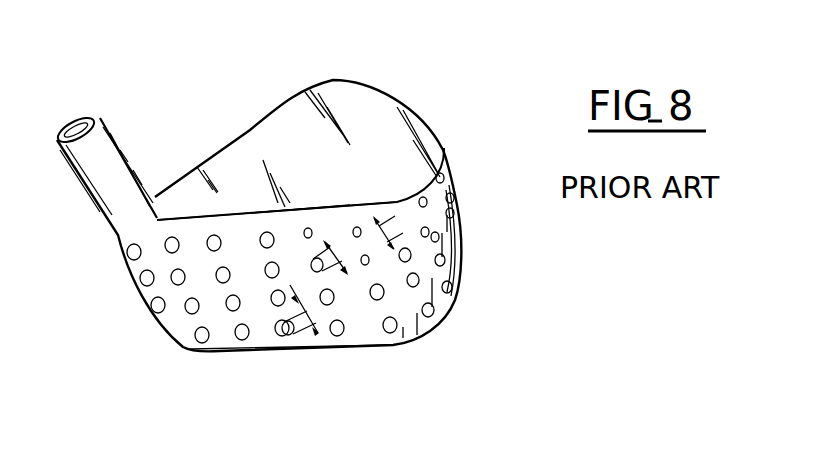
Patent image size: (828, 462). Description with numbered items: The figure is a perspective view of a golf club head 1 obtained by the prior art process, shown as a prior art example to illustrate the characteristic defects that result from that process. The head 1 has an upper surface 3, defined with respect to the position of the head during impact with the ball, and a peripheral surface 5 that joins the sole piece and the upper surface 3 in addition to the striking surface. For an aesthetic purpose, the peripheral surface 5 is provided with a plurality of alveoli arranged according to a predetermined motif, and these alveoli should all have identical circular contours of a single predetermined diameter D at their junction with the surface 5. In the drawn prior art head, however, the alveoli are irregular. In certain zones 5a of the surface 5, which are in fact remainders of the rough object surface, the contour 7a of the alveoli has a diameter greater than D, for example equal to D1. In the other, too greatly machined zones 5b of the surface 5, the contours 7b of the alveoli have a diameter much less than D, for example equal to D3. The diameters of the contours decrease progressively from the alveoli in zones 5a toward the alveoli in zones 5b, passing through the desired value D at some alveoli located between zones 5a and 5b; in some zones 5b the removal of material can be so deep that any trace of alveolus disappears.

The head 1 is at (438, 107).
The upper surface 3 is at (357, 102).
The peripheral surface 5 is at (315, 340).
The zones of surface 5a is at (187, 347).
The zones of surface 5b is at (327, 220).
The contour 7a is at (208, 338).
The contours 7b is at (392, 215).
The diameter D is at (329, 267).
The diameter D1 is at (300, 306).
The diameter D3 is at (387, 245).